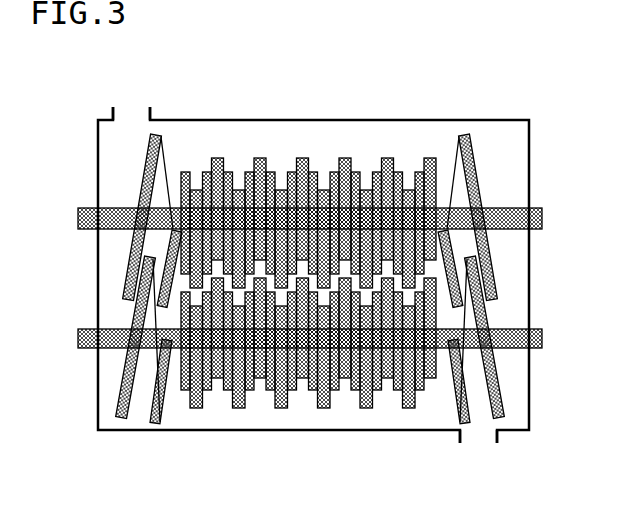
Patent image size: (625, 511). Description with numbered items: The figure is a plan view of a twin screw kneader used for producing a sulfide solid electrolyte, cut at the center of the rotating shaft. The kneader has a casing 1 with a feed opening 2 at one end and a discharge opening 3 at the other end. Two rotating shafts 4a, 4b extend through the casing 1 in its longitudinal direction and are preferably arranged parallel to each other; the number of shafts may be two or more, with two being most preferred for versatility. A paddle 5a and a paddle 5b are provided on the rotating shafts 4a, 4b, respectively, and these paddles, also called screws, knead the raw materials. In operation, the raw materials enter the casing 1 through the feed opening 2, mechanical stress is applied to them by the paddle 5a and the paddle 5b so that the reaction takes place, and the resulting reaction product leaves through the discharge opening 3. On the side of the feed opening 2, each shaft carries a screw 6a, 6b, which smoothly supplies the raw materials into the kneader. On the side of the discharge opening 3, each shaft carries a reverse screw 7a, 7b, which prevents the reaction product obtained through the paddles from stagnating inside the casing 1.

The casing 1 is at (405, 120).
The feed opening 2 is at (133, 108).
The discharge opening 3 is at (481, 440).
The rotating shaft 4a is at (83, 208).
The rotating shaft 4b is at (83, 329).
The paddle 5a is at (324, 171).
The paddle 5b is at (342, 388).
The screw 6a is at (160, 133).
The screw 6b is at (153, 425).
The reverse screw 7a is at (467, 132).
The reverse screw 7b is at (453, 410).